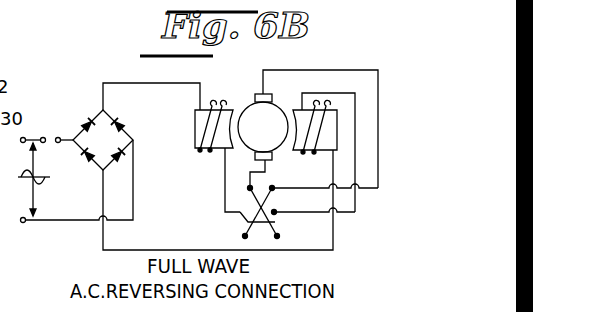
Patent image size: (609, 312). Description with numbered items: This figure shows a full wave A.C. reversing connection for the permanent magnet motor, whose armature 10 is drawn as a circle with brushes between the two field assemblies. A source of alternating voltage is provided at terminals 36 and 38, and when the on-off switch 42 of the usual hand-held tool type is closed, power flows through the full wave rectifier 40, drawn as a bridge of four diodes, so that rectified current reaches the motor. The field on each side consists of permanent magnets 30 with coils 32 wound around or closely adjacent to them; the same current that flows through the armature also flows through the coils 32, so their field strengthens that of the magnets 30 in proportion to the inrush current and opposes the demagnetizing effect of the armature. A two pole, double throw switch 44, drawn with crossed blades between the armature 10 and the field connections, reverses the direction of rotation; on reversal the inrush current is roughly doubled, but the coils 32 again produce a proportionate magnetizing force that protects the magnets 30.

The motor armature 10 is at (272, 131).
The permanent magnets 30 is at (195, 130).
The coils 32 is at (213, 106).
The terminal 36 is at (24, 137).
The terminal 38 is at (23, 223).
The rectifier 40 is at (94, 108).
The on-off switch 42 is at (58, 143).
The two pole, double throw switch 44 is at (242, 230).